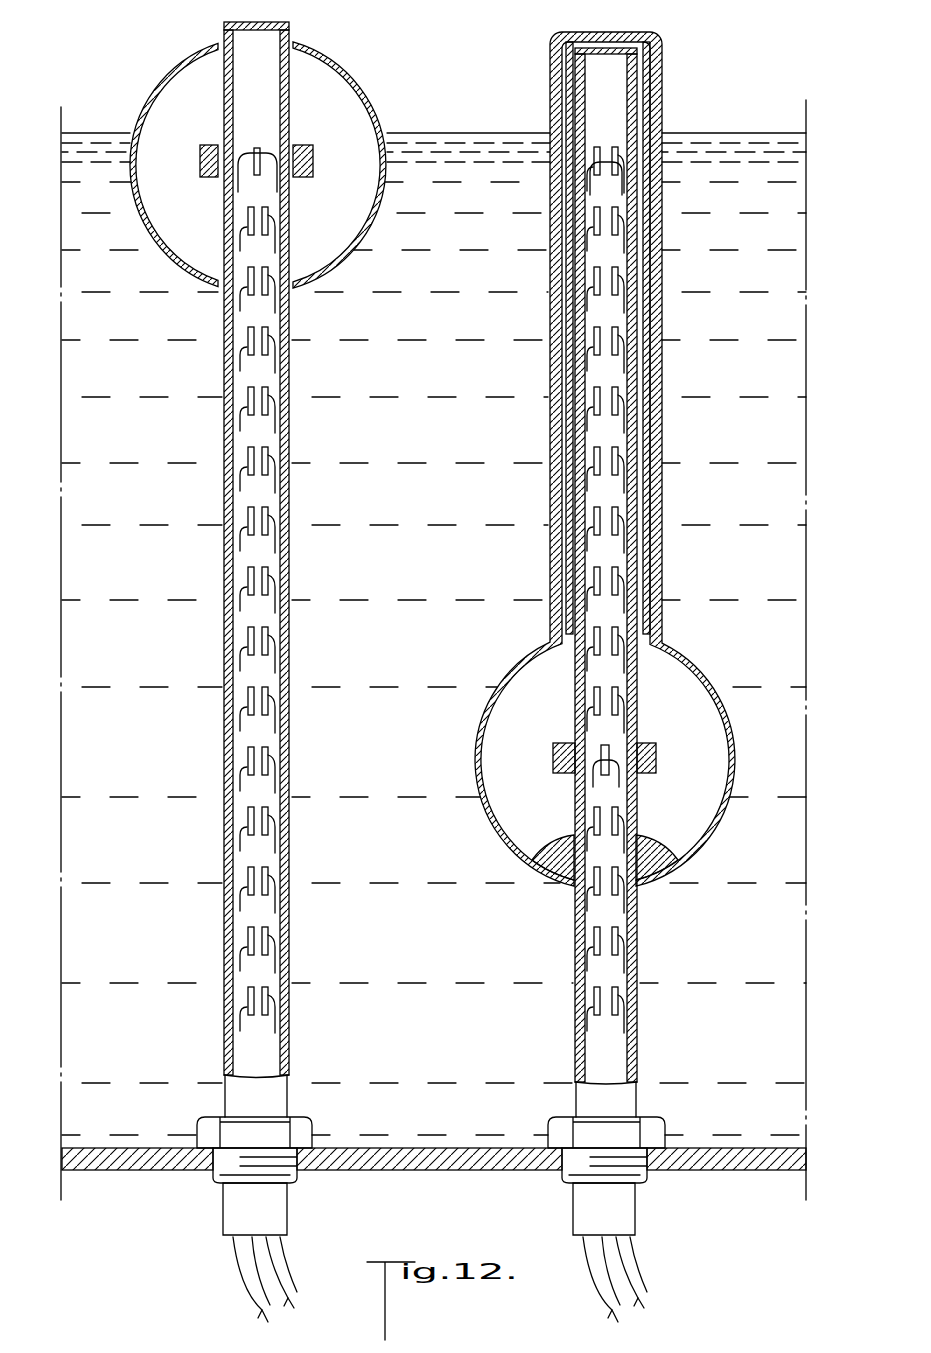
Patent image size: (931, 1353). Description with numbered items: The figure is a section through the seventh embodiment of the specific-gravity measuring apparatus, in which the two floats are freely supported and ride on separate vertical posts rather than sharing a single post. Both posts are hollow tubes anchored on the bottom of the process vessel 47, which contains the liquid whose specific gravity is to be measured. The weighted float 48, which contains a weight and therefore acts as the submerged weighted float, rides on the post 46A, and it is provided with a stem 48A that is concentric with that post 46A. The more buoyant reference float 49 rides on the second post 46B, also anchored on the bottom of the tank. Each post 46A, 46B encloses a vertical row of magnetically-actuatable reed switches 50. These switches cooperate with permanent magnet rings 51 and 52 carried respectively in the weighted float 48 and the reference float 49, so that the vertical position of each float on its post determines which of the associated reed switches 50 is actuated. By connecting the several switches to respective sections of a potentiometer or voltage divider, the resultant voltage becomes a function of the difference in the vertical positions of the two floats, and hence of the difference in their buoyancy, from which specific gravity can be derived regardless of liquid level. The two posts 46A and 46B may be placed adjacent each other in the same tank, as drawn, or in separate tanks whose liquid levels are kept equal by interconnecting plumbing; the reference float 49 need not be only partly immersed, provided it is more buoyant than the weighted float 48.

The post 46A is at (637, 1003).
The post 46B is at (289, 742).
The process vessel 47 is at (383, 1162).
The weighted float 48 is at (512, 850).
The stem 48A is at (662, 561).
The reference float 49 is at (350, 248).
The reed switches 50 is at (262, 507).
The permanent magnet ring 51 is at (656, 756).
The permanent magnet ring 52 is at (206, 178).